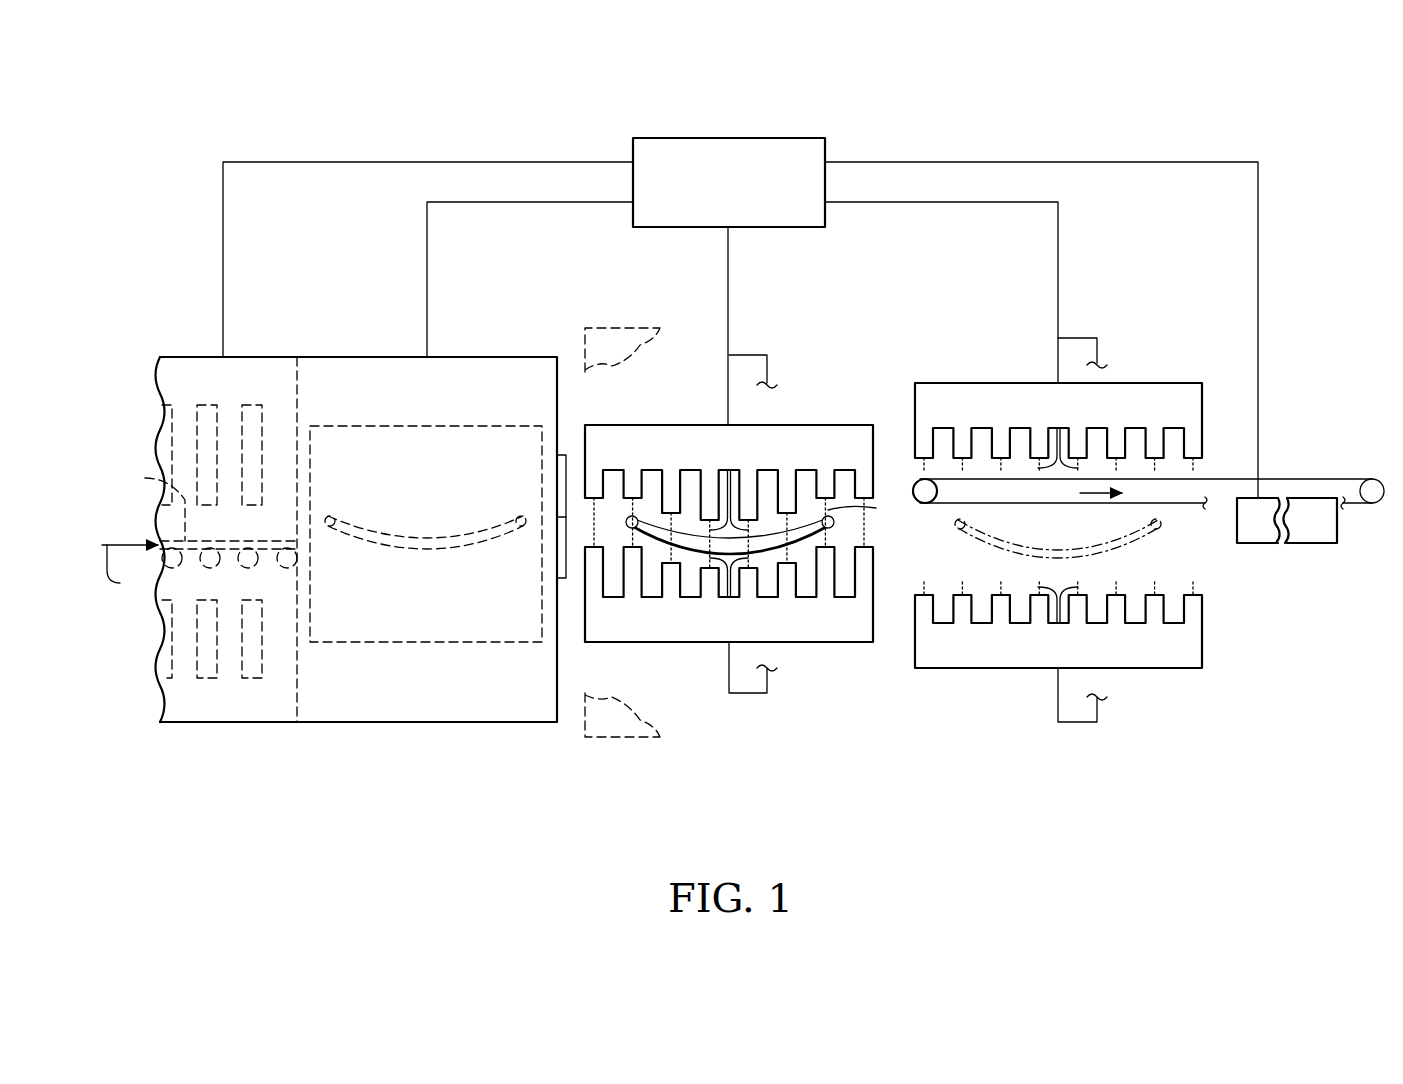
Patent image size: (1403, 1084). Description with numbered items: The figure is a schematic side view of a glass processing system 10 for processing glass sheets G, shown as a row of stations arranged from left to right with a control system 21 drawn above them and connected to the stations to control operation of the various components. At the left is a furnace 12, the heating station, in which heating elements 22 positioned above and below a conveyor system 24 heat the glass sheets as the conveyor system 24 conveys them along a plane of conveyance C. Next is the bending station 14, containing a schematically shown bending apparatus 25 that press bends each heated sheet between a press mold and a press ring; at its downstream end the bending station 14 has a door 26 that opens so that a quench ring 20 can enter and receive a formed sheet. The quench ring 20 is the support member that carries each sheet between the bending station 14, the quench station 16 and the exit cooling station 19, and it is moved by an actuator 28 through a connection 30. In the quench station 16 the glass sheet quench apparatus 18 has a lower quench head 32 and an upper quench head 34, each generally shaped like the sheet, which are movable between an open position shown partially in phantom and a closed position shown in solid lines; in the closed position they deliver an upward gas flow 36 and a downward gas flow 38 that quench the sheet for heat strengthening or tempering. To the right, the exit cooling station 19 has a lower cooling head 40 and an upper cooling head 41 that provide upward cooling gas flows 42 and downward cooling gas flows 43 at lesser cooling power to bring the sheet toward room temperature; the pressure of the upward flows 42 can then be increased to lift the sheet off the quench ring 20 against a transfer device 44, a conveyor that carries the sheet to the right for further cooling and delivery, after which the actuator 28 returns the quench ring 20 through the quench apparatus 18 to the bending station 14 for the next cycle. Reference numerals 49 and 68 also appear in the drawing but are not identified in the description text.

The glass processing system 10 is at (535, 808).
The furnace 12 is at (233, 730).
The bending station 14 is at (441, 582).
The quench station 16 is at (739, 554).
The glass sheet quench apparatus 18 is at (820, 680).
The exit cooling station 19 is at (1134, 559).
The quench ring 20 is at (352, 540).
The control system 21 is at (770, 138).
The heating elements 22 is at (258, 405).
The conveyor system 24 is at (205, 570).
The bending apparatus 25 is at (440, 658).
The door 26 is at (560, 455).
The actuator 28 is at (1262, 543).
The connection 30 is at (1178, 527).
The lower quench head 32 is at (620, 642).
The upper quench head 34 is at (620, 370).
The upward gas flow 36 is at (729, 597).
The downward gas flow 38 is at (729, 483).
The lower cooling head 40 is at (1203, 645).
The upper cooling head 41 is at (1203, 417).
The upward cooling gas flows 42 is at (1058, 627).
The downward cooling gas flows 43 is at (1058, 432).
The transfer device 44 is at (1235, 470).
The mold body 49 is at (805, 432).
The conveyor roller 68 is at (912, 485).